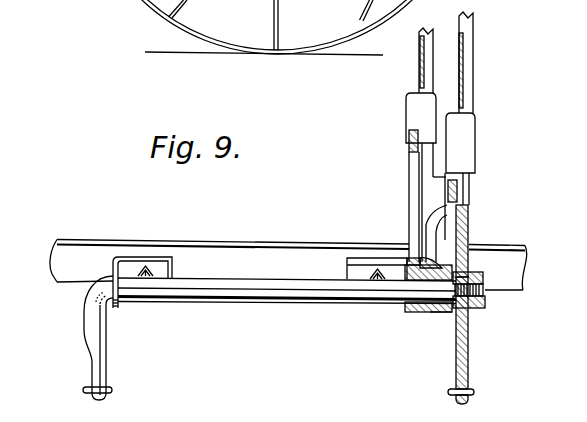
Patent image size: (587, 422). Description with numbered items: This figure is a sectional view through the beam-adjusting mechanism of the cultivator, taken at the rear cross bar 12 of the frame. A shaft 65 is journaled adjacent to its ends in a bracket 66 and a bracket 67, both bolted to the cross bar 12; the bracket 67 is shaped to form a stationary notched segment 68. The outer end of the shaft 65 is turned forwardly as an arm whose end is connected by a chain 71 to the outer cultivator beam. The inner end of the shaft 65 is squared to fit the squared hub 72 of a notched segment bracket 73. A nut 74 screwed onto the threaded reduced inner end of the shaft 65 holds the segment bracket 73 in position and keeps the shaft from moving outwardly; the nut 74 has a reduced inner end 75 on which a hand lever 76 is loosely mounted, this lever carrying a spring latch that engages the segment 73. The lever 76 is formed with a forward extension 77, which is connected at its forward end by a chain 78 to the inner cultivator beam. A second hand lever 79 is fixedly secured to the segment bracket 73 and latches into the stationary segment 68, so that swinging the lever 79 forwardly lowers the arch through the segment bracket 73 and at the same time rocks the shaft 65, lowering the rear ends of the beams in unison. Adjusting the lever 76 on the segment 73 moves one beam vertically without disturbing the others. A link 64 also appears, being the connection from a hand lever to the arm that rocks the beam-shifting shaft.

The rear cross bar 12 is at (228, 233).
The link 64 is at (86, 338).
The shaft 65 is at (287, 310).
The bracket 66 is at (119, 303).
The bracket 67 is at (410, 312).
The notched segment 68 is at (409, 140).
The chain 71 is at (109, 390).
The squared hub 72 is at (440, 312).
The notched segment bracket 73 is at (457, 192).
The nut 74 is at (481, 297).
The reduced inner end 75 is at (466, 309).
The hand lever 76 is at (466, 96).
The forward extension 77 is at (468, 368).
The chain 78 is at (475, 394).
The hand lever 79 is at (419, 80).